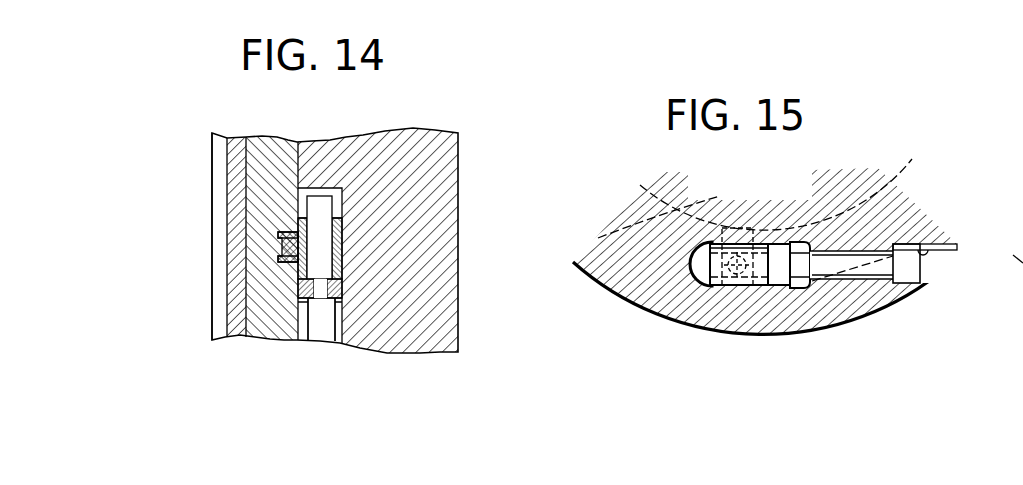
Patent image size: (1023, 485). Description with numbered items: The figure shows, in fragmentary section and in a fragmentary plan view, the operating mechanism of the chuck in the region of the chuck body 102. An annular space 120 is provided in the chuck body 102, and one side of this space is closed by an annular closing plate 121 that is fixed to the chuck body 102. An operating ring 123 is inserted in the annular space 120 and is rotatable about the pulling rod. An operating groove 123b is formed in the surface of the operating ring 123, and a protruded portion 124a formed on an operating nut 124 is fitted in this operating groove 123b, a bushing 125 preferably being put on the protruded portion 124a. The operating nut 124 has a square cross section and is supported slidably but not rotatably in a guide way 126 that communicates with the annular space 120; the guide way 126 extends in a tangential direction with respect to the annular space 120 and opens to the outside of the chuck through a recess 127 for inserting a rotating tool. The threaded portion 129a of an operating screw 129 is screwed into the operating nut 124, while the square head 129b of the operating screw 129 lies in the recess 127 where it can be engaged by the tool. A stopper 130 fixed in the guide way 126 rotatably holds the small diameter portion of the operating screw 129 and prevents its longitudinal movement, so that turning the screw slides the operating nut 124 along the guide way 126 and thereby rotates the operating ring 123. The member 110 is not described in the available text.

In FIG. 14, the chuck body 102 is at (432, 328).
In FIG. 15, the chuck body 102 is at (691, 305).
In FIG. 15, the member 110 is at (1014, 289).
In FIG. 14, the annular space 120 is at (296, 158).
In FIG. 14, the annular closing plate 121 is at (233, 153).
In FIG. 14, the operating ring 123 is at (258, 317).
In FIG. 15, the operating ring 123 is at (638, 215).
In FIG. 14, the operating groove 123b is at (291, 268).
In FIG. 14, the operating nut 124 is at (336, 243).
In FIG. 15, the operating nut 124 is at (759, 270).
In FIG. 14, the protruded portion 124a is at (282, 247).
In FIG. 15, the protruded portion 124a is at (733, 232).
In FIG. 14, the bushing 125 is at (288, 232).
In FIG. 14, the guide way 126 is at (338, 202).
In FIG. 15, the recess 127 is at (927, 246).
In FIG. 14, the operating screw 129 is at (321, 322).
In FIG. 15, the operating screw 129 is at (882, 268).
In FIG. 14, the threaded portion 129a is at (318, 212).
In FIG. 15, the threaded portion 129a is at (779, 258).
In FIG. 15, the square head 129b is at (918, 268).
In FIG. 14, the stopper 130 is at (343, 308).
In FIG. 15, the stopper 130 is at (801, 242).